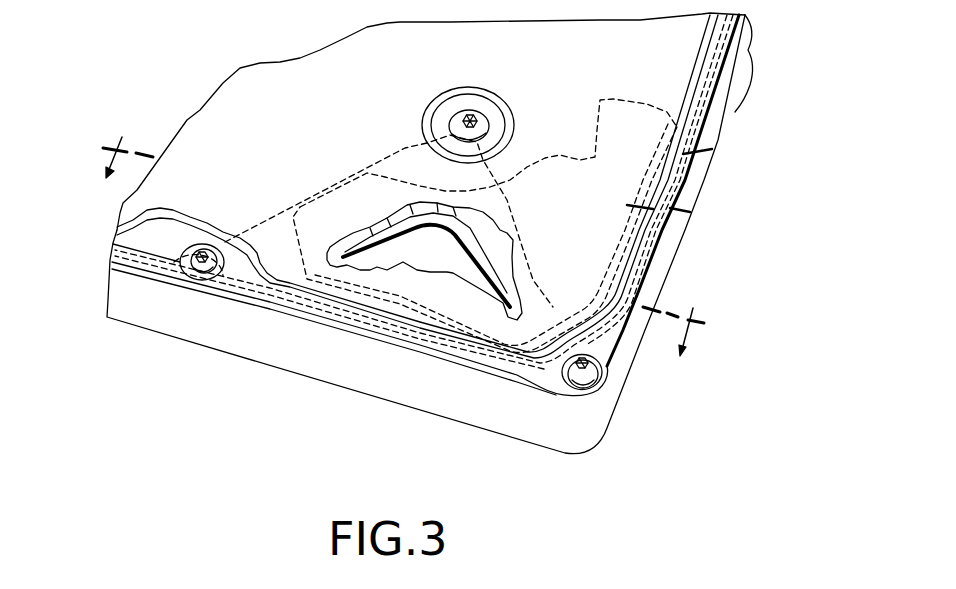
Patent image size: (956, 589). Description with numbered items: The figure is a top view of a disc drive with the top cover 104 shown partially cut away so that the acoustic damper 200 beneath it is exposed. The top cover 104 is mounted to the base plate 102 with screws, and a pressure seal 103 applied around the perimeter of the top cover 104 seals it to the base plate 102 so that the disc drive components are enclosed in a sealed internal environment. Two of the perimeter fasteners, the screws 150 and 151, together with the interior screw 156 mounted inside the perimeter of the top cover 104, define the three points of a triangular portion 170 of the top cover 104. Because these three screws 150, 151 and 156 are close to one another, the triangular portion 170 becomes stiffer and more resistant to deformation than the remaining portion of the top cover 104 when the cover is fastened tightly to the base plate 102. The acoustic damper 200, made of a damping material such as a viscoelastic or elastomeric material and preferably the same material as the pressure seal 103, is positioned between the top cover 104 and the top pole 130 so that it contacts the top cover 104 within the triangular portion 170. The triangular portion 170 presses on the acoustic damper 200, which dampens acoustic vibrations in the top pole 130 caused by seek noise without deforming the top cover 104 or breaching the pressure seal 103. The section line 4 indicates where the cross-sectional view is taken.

The base plate 102 is at (583, 430).
The pressure seal 103 is at (723, 150).
The top cover 104 is at (247, 87).
The top pole 130 is at (698, 223).
The perimeter fastener 150 is at (588, 365).
The perimeter fastener 151 is at (195, 266).
The interior screw 156 is at (472, 122).
The triangular portion 170 is at (402, 150).
The acoustic damper 200 is at (480, 260).
The section line 4- 4 is at (399, 246).